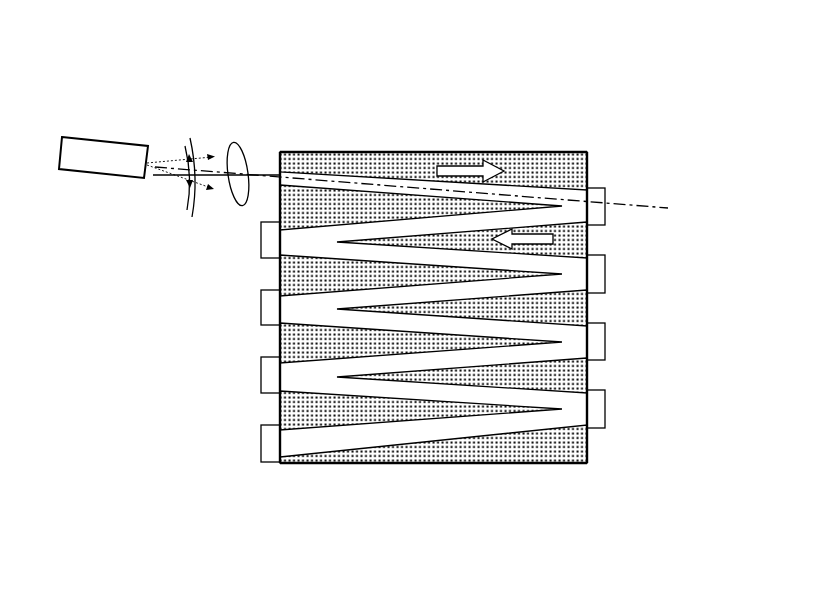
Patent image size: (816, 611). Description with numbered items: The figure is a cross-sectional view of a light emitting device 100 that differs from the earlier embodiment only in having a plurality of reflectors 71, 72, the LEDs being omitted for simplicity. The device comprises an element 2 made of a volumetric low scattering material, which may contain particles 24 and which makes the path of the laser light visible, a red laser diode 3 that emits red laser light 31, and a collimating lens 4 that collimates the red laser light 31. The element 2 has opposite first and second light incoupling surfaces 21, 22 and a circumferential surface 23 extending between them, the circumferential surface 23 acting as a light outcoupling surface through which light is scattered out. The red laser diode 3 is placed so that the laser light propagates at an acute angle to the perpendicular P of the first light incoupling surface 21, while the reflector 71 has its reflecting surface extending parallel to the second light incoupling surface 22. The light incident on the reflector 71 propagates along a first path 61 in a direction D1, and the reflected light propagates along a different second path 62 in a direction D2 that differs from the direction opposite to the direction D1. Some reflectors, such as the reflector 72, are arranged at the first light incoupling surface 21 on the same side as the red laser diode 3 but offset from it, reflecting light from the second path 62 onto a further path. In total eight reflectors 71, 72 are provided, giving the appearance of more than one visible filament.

The light emitting device 100 is at (530, 80).
The element 2 is at (557, 152).
The red laser diode 3 is at (103, 150).
The red laser light 31 is at (168, 160).
The collimating lens 4 is at (242, 148).
The first path 61 is at (328, 178).
The second path 62 is at (392, 227).
The reflector 71 is at (600, 198).
The reflector 72 is at (262, 243).
The first light incoupling surface 21 is at (277, 400).
The second light incoupling surface 22 is at (590, 304).
The circumferential surface 23 is at (418, 463).
The particles 24 is at (540, 447).
The direction of propagation D1 is at (477, 155).
The direction D2 is at (590, 246).
The perpendicular P is at (258, 175).